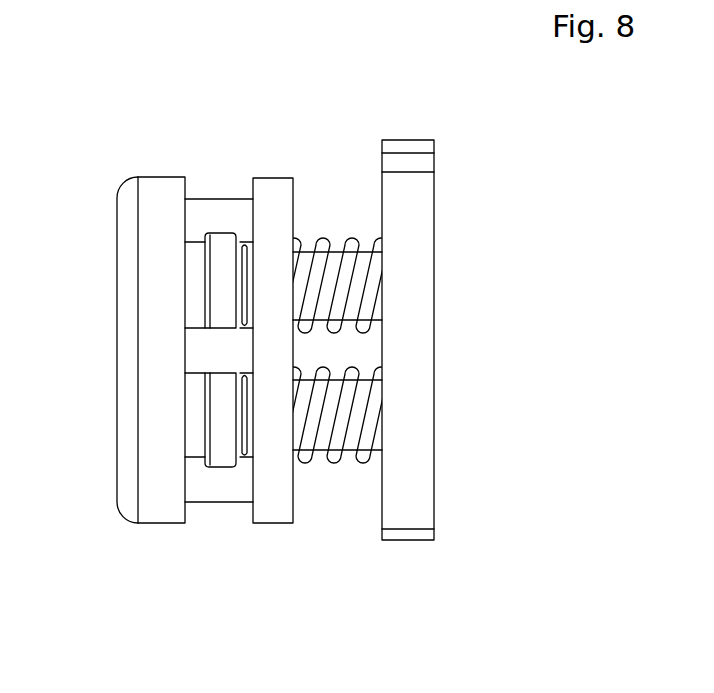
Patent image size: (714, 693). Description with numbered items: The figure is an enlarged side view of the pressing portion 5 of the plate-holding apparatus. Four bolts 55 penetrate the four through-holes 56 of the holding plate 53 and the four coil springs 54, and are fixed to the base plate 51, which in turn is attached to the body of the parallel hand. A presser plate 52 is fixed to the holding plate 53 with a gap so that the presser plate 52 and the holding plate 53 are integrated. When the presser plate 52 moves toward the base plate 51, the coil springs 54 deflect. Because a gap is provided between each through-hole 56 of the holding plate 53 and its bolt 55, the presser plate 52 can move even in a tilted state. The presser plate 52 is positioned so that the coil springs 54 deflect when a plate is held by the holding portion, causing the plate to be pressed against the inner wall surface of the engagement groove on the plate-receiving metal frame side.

The pressing portion 5 is at (372, 558).
The base plate 51 is at (402, 187).
The presser plate 52 is at (150, 503).
The holding plate 53 is at (275, 510).
The coil spring 54 is at (317, 233).
The bolt 55 is at (330, 440).
The through-hole 56 is at (248, 458).